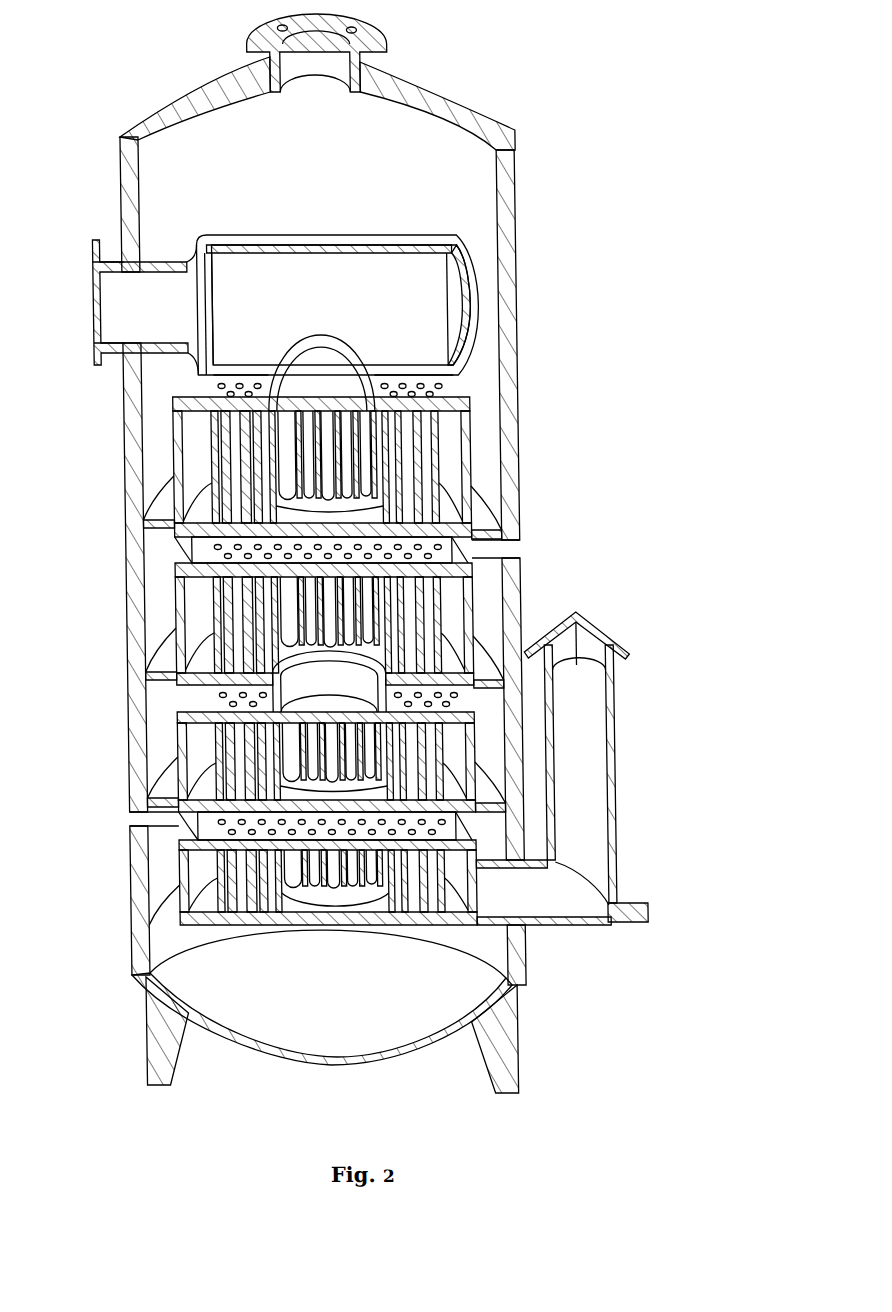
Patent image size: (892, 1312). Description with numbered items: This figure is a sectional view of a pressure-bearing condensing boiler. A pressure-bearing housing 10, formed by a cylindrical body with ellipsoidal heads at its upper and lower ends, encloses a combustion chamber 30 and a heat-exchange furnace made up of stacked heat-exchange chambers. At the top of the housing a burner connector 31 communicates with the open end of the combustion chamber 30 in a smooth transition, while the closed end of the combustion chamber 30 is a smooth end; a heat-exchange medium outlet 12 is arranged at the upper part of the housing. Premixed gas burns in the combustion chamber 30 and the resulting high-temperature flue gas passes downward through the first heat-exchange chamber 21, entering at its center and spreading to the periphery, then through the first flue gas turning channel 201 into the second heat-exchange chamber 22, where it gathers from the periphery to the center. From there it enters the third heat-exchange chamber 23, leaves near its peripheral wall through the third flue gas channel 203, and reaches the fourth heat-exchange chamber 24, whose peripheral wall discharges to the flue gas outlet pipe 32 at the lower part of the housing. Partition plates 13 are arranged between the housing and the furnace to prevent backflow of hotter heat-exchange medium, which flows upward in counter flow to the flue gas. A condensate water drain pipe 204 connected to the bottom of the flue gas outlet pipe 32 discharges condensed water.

The pressure-bearing housing 10 is at (506, 130).
The heat-exchange medium outlet 12 is at (380, 44).
The partition plate 13 is at (153, 512).
The first heat-exchange chamber 21 is at (175, 436).
The second heat-exchange chamber 22 is at (175, 593).
The third heat-exchange chamber 23 is at (176, 742).
The fourth heat-exchange chamber 24 is at (176, 880).
The combustion chamber 30 is at (254, 238).
The burner connector 31 is at (101, 243).
The flue gas outlet pipe 32 is at (592, 858).
The first flue gas turning channel 201 is at (474, 558).
The third flue gas channel 203 is at (155, 820).
The condensate water drain pipe 204 is at (637, 924).